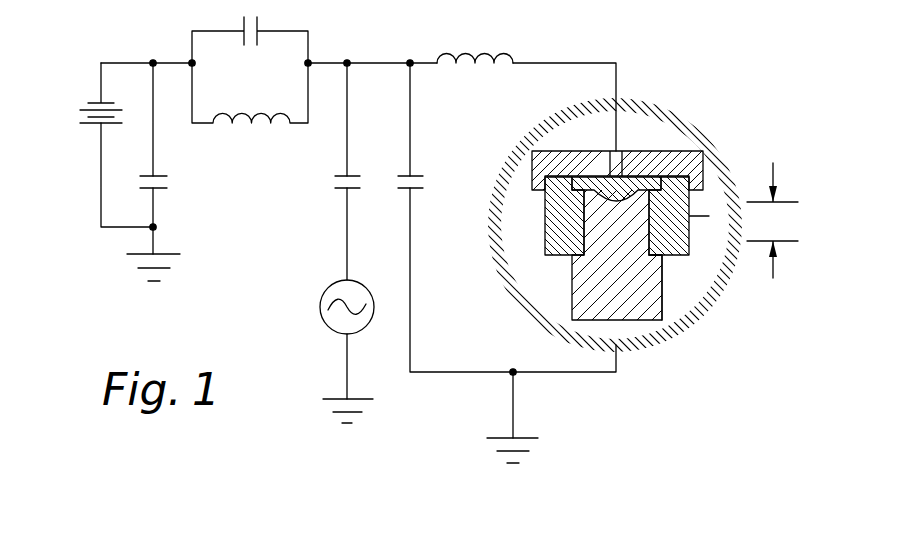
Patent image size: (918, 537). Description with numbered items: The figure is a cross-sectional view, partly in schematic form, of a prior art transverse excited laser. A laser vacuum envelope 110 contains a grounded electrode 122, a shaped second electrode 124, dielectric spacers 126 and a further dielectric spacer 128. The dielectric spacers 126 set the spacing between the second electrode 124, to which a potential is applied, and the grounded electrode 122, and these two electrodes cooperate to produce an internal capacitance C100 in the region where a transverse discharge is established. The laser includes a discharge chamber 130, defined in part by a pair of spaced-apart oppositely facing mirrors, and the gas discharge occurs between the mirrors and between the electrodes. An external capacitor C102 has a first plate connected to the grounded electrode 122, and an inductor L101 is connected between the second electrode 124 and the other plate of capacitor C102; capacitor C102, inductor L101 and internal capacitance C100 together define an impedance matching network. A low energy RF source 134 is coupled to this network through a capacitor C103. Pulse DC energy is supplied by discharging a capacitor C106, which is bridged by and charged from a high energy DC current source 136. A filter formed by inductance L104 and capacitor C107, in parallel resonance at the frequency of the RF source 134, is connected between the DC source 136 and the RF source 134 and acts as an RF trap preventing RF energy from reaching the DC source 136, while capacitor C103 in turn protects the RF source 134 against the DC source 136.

The laser vacuum envelope 110 is at (660, 78).
The grounded electrode 122 is at (571, 302).
The shaped second electrode 124 is at (594, 192).
The dielectric spacers 126 is at (545, 254).
The further dielectric spacer 128 is at (677, 151).
The discharge chamber 130 is at (688, 257).
The low energy RF source 134 is at (334, 285).
The high energy DC current source 136 is at (96, 125).
The internal capacitance C100 is at (772, 220).
The external capacitor C102 is at (429, 167).
The capacitor C103 is at (325, 200).
The capacitor C106 is at (174, 198).
The capacitor C107 is at (250, 47).
The inductor L101 is at (475, 46).
The inductance L104 is at (250, 114).